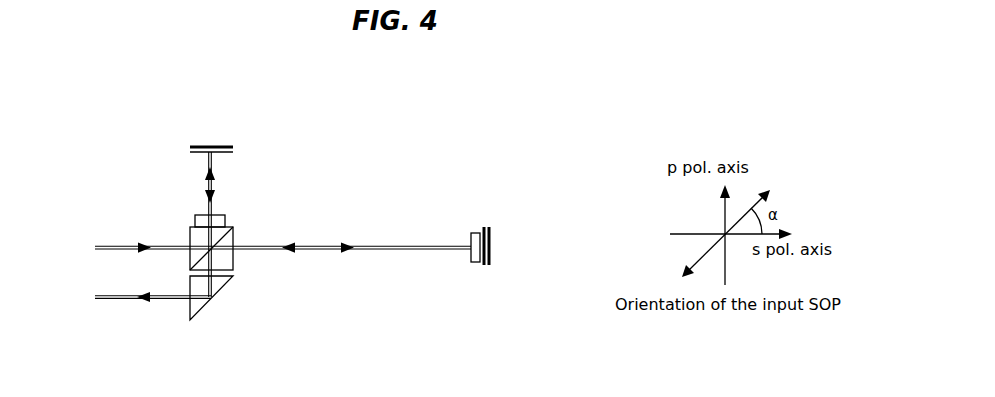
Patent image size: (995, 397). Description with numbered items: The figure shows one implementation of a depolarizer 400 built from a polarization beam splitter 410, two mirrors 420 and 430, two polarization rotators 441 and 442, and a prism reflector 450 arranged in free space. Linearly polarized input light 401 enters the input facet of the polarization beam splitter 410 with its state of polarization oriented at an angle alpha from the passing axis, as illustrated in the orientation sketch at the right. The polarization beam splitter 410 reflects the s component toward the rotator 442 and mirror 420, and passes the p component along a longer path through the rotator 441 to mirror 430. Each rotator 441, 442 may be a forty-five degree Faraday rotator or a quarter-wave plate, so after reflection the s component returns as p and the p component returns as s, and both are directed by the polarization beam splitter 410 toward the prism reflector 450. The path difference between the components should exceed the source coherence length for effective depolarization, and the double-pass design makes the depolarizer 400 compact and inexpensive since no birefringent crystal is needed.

The depolarizer 400 is at (418, 117).
The input light 401 is at (117, 245).
The polarization beam splitter 410 is at (237, 270).
The mirror 420 is at (233, 147).
The mirror 430 is at (490, 230).
The polarization rotator 441 is at (385, 197).
The polarization rotator 442 is at (200, 218).
The prism reflector 450 is at (210, 317).